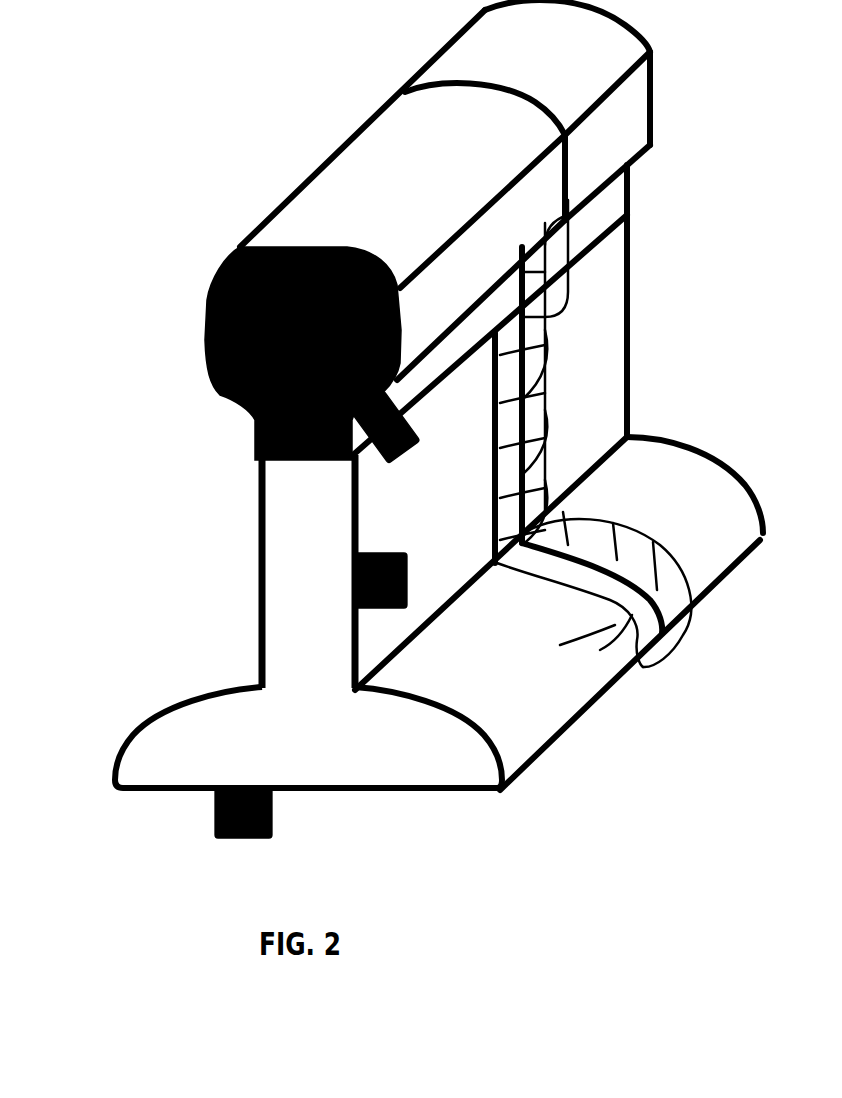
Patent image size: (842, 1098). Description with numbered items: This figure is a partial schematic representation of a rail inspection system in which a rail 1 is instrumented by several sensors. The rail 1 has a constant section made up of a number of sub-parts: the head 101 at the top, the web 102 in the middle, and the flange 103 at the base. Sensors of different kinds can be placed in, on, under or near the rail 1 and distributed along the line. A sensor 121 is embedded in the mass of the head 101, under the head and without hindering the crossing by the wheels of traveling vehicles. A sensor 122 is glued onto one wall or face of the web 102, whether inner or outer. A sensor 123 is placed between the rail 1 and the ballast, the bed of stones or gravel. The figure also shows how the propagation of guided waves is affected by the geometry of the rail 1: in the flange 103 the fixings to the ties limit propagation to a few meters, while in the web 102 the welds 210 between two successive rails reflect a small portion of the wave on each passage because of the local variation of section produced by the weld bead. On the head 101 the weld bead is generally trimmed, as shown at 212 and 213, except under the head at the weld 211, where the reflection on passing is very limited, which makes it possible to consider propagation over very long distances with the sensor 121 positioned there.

The rail 1 is at (278, 517).
The head 101 is at (213, 385).
The web 102 is at (258, 578).
The flange 103 is at (113, 770).
The sensor 121 is at (407, 453).
The sensor 122 is at (407, 563).
The sensor 123 is at (277, 817).
The weld 210 is at (550, 403).
The weld 211 is at (578, 277).
The trimmed weld bead 212 is at (570, 153).
The trimmed weld bead 213 is at (510, 85).